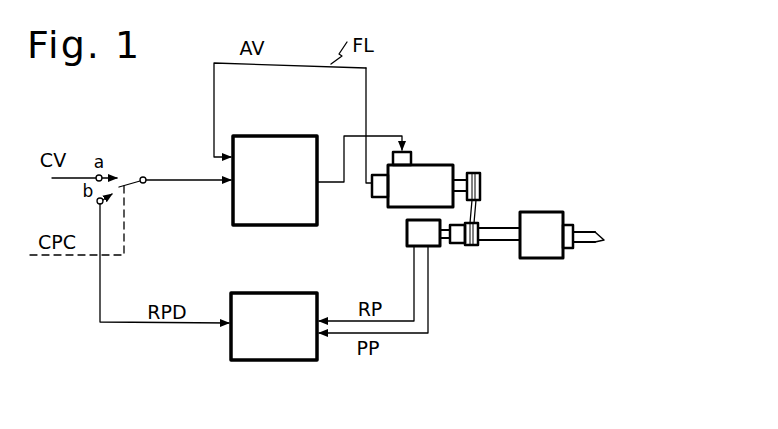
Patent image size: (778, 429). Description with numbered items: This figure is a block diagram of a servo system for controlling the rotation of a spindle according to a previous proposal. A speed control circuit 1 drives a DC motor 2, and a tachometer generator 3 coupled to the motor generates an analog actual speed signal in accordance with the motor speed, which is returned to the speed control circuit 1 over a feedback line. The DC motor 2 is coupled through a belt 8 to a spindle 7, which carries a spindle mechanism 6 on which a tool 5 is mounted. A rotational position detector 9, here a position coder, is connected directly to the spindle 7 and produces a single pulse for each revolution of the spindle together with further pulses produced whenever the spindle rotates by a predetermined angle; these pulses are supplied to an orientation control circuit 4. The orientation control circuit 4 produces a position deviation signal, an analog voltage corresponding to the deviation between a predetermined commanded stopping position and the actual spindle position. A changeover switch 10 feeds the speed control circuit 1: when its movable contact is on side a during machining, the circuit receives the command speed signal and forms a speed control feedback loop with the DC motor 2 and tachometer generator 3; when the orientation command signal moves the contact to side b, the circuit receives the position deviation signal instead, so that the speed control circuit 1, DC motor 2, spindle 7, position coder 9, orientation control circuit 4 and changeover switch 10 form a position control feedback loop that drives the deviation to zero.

The speed control circuit 1 is at (277, 226).
The DC motor 2 is at (441, 163).
The tachometer generator 3 is at (378, 195).
The orientation control circuit 4 is at (288, 361).
The tool 5 is at (593, 232).
The spindle mechanism 6 is at (548, 210).
The spindle 7 is at (502, 241).
The belt 8 is at (482, 202).
The rotational position detector 9 is at (438, 248).
The changeover switch 10 is at (125, 171).